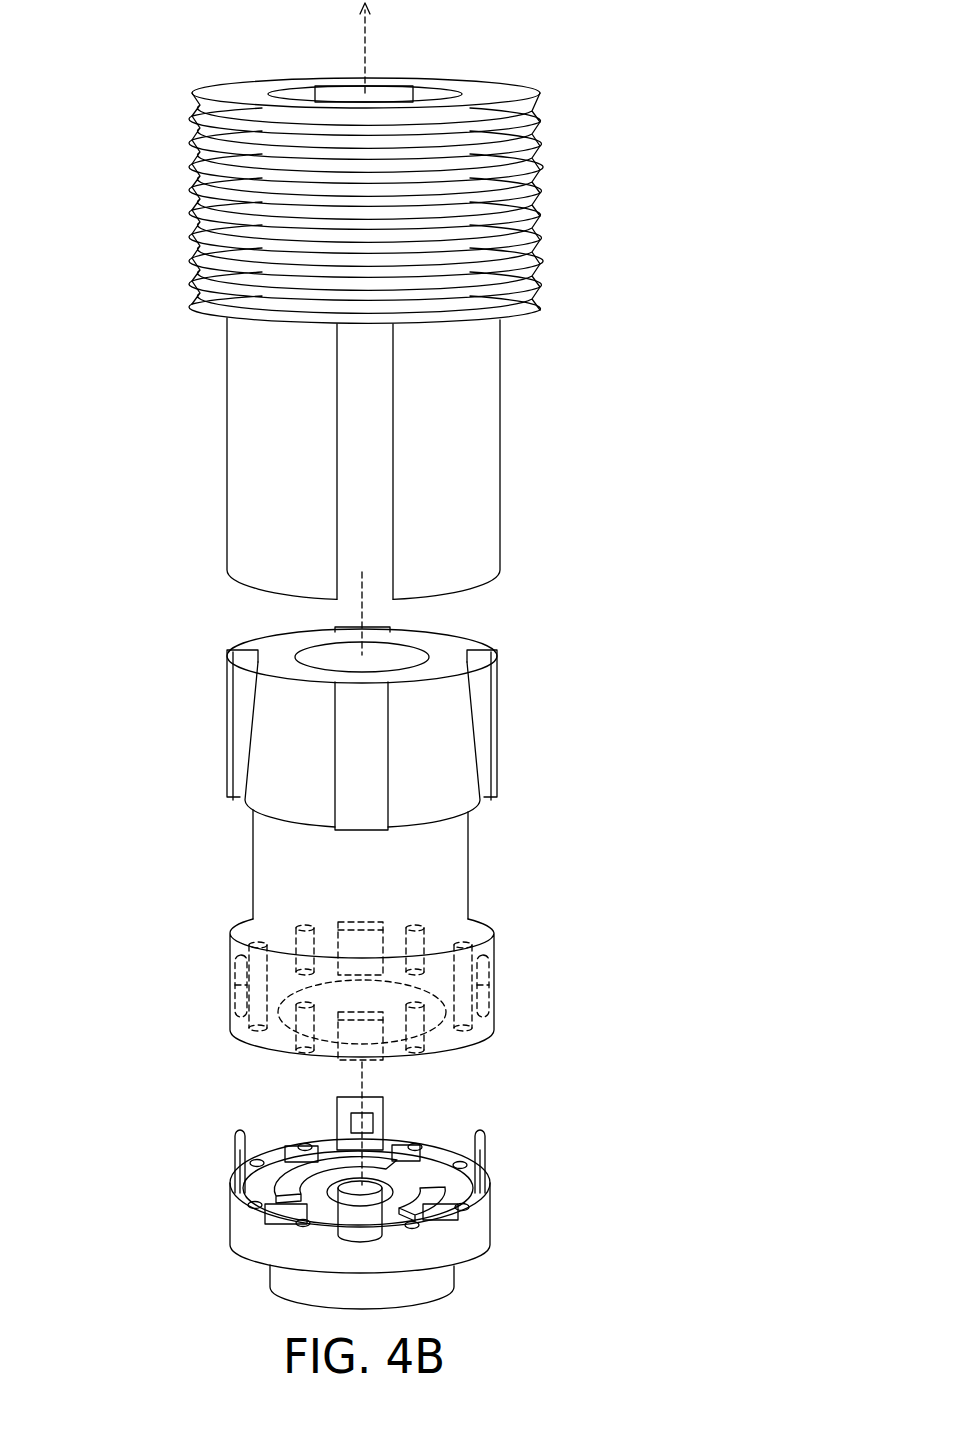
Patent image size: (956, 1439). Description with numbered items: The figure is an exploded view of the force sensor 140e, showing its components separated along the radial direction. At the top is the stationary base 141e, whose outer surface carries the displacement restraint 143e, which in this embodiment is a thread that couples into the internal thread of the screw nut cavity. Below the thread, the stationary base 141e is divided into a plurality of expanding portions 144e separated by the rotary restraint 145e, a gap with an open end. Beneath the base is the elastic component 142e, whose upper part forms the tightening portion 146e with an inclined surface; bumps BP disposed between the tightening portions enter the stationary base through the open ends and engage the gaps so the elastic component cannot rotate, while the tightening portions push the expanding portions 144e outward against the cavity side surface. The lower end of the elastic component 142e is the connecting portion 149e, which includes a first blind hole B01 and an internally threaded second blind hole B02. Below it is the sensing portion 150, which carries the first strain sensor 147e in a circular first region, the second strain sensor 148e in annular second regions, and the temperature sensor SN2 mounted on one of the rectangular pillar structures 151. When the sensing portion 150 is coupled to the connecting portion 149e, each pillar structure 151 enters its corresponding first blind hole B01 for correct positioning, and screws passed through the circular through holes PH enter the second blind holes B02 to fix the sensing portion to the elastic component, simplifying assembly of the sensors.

The force sensor 140e is at (373, 664).
The stationary base 141e is at (181, 146).
The displacement restraint 143e is at (218, 242).
The expanding portion 144e is at (492, 388).
The rotary restraint 145e is at (370, 492).
The tightening portion 146e is at (290, 745).
The bump BP is at (368, 755).
The elastic component 142e is at (448, 862).
The connecting portion 149e is at (389, 1015).
The first blind hole B01 is at (348, 1060).
The second blind hole B02 is at (297, 1048).
The sensing portion 150 is at (363, 1209).
The first strain sensor 147e is at (435, 1170).
The second strain sensor 148e is at (295, 1185).
The rectangular pillar structure 151 is at (235, 1153).
The temperature sensor SN2 is at (375, 1122).
The circular through hole PH is at (290, 1225).